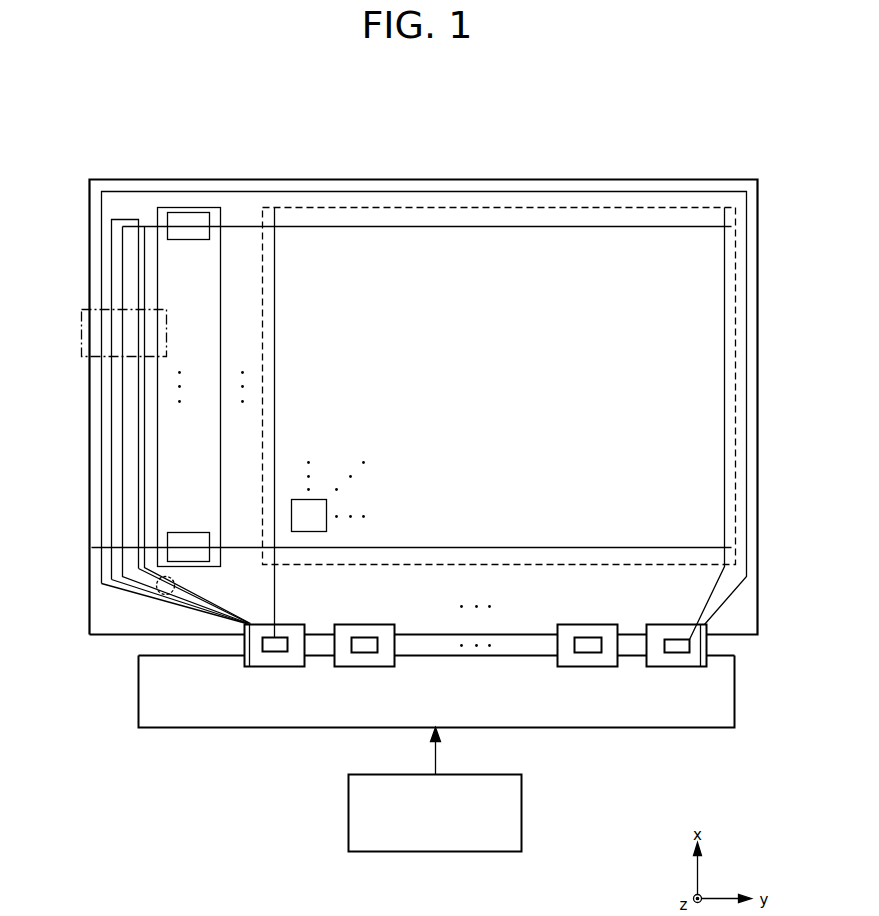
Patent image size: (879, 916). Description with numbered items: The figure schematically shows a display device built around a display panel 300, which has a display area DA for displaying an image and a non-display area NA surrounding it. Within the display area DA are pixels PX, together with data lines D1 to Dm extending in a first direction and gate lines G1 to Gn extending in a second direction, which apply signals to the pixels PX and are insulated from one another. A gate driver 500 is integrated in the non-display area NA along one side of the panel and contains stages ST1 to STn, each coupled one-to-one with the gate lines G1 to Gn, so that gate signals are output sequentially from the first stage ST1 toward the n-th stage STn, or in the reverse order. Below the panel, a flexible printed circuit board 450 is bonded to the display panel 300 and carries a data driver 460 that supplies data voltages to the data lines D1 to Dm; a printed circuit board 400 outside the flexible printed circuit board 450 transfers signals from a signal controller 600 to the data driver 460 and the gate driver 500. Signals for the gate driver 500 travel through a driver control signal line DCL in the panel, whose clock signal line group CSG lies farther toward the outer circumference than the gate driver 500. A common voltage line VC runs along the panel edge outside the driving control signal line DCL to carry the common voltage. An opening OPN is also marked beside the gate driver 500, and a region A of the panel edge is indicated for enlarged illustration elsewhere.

The display panel 300 is at (758, 413).
The printed circuit board 400 is at (735, 690).
The flexible printed circuit board 450 is at (662, 668).
The data driver 460 is at (680, 653).
The gate driver 500 is at (189, 353).
The signal controller 600 is at (522, 813).
The display area DA is at (736, 295).
The non-display area NA is at (735, 612).
The opening OPN is at (125, 220).
The clock signal line group CSG is at (123, 433).
The common voltage line VC is at (92, 548).
The driver control signal line DCL is at (162, 597).
The region A is at (82, 332).
The pixel PX is at (275, 548).
The first gate line G1 is at (427, 215).
The n-th gate line Gn is at (412, 539).
The first data line D1 is at (292, 423).
The m-th data line Dm is at (705, 424).
The first stage ST1 is at (189, 227).
The n-th stage STn is at (189, 548).